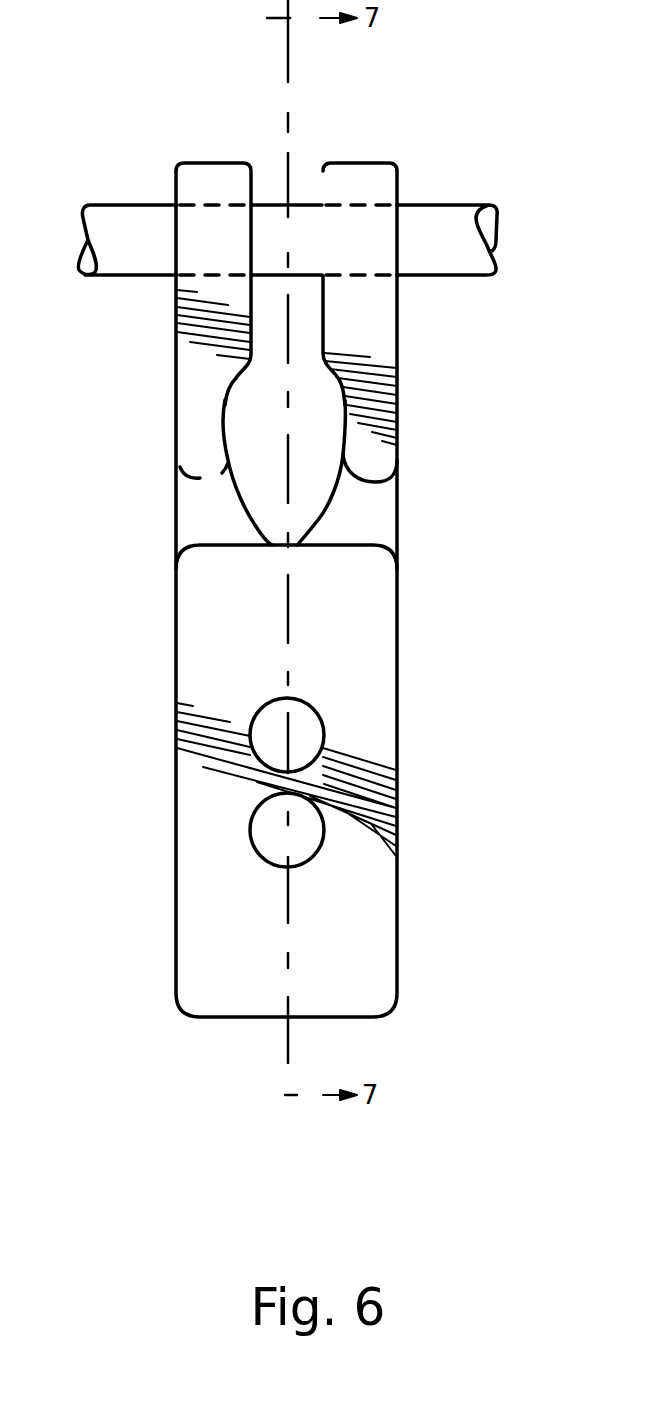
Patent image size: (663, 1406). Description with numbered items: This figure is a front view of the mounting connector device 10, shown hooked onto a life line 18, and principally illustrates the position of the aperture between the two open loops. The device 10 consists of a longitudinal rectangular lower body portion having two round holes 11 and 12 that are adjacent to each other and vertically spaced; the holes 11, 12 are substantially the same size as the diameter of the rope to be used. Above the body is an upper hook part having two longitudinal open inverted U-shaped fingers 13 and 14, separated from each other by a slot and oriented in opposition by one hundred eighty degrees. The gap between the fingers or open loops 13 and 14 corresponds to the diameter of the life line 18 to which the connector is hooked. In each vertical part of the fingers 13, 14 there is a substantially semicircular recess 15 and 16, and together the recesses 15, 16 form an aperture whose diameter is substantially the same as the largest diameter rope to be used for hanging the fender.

The device 10 is at (397, 997).
The round hole 11 is at (314, 852).
The round hole 12 is at (333, 741).
The finger 13 is at (358, 163).
The finger 14 is at (217, 163).
The semicircular recess 15 is at (237, 365).
The semicircular recess 16 is at (333, 373).
The life line 18 is at (443, 205).